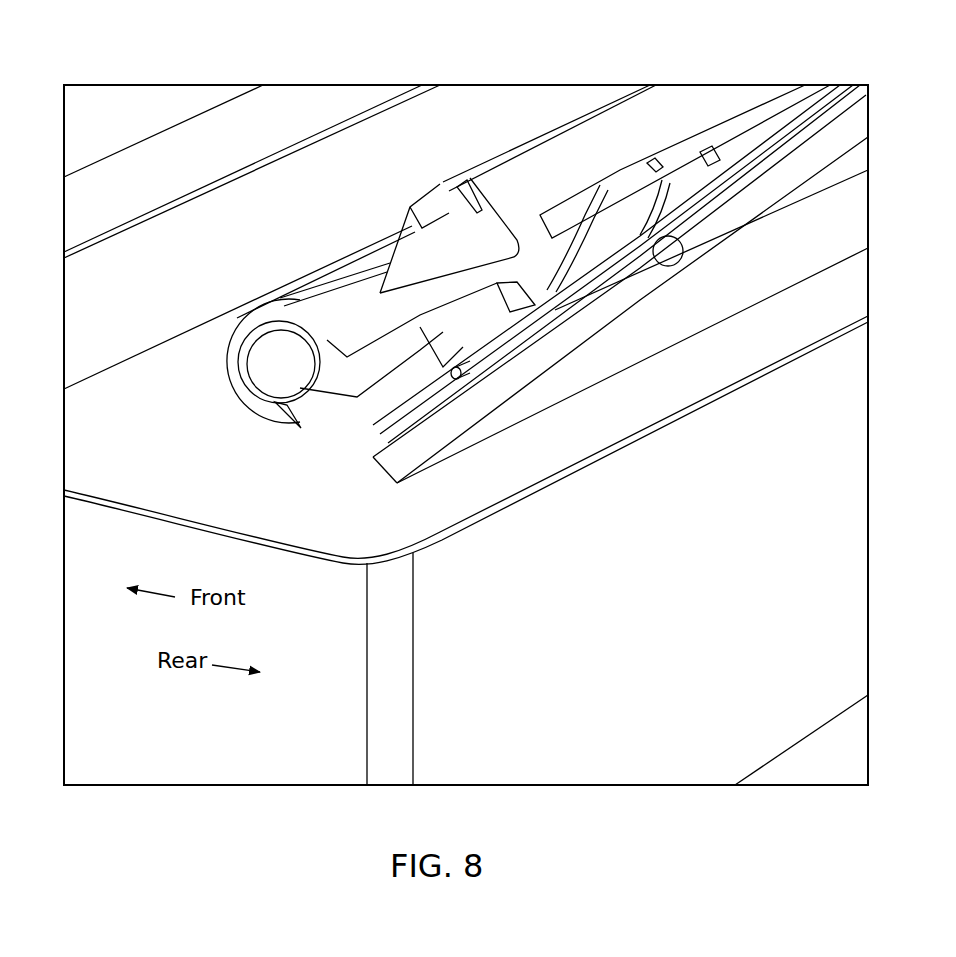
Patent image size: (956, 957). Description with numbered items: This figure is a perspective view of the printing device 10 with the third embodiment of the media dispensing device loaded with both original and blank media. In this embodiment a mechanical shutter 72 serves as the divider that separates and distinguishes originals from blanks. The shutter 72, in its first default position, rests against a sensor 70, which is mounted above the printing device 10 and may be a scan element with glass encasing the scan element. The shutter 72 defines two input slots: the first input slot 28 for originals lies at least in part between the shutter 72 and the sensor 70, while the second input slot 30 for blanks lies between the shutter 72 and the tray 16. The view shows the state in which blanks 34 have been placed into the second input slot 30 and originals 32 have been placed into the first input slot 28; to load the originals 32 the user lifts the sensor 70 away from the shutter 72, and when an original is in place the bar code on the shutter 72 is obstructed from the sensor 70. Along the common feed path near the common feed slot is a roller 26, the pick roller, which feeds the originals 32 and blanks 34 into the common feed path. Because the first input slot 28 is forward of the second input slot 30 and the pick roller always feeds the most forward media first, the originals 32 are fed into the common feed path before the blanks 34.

The printing device 10 is at (607, 590).
The tray 16 is at (632, 342).
The roller 26 is at (277, 373).
The first input slot 28 is at (807, 98).
The second input slot 30 is at (825, 104).
The originals 32 is at (630, 227).
The blanks 34 is at (747, 155).
The sensor 70 is at (470, 323).
The shutter 72 is at (497, 347).